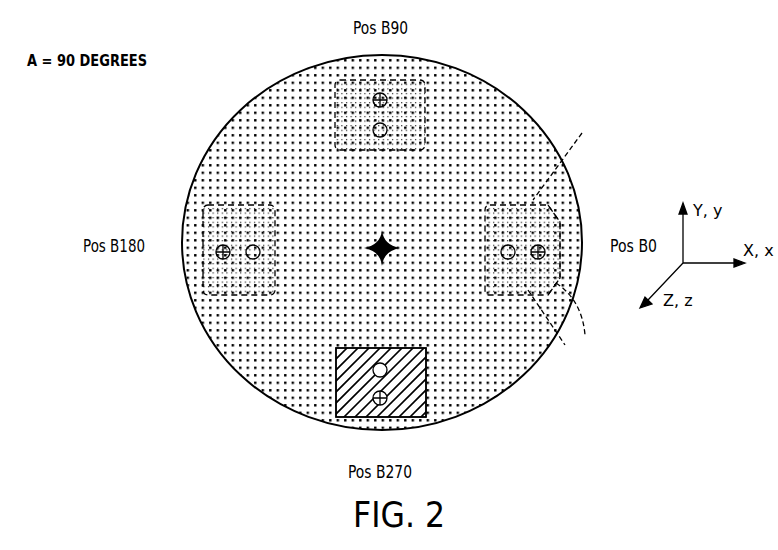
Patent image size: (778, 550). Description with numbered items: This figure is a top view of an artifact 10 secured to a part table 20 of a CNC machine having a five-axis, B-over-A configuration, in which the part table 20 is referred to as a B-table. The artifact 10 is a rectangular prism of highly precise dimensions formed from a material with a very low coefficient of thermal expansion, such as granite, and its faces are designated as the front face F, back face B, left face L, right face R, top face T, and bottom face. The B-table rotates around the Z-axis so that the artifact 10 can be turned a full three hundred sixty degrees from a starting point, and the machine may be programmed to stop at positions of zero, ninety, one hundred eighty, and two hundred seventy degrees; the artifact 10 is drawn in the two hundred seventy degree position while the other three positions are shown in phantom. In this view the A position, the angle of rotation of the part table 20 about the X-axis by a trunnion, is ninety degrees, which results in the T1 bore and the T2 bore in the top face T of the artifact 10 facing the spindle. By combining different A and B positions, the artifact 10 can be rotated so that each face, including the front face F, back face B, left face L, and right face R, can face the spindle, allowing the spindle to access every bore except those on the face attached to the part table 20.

The part table 20 is at (508, 92).
The artifact 10 is at (392, 396).
The T1 bore T1 is at (366, 383).
The T2 bore T2 is at (376, 402).
The back face B is at (560, 156).
The right face R is at (580, 216).
The top face T is at (572, 319).
The front face F is at (548, 328).
The left face L is at (485, 248).